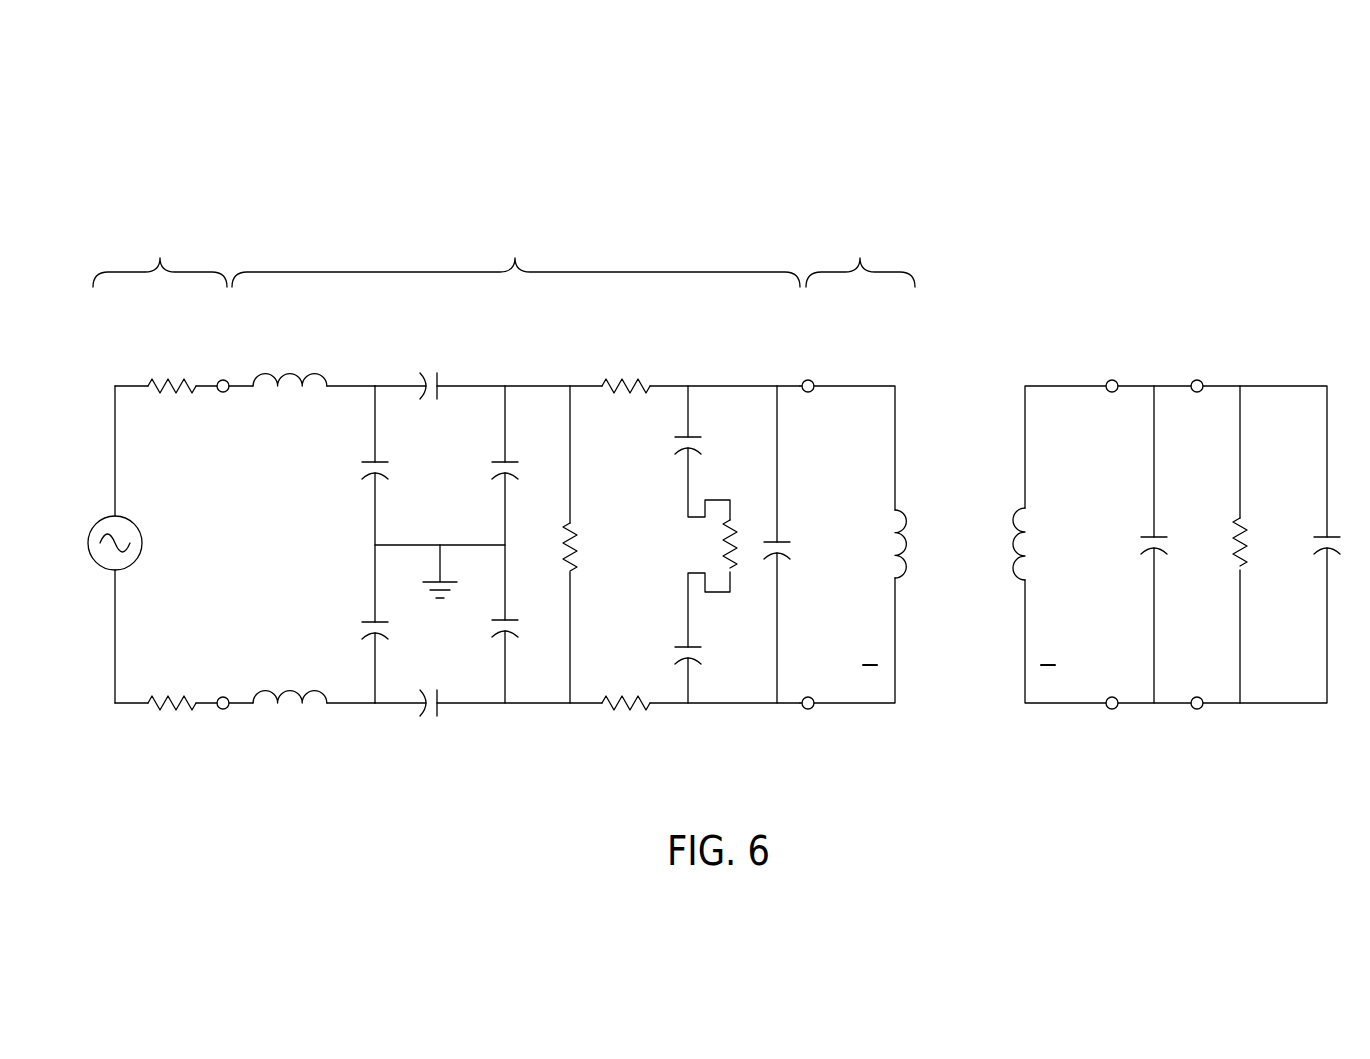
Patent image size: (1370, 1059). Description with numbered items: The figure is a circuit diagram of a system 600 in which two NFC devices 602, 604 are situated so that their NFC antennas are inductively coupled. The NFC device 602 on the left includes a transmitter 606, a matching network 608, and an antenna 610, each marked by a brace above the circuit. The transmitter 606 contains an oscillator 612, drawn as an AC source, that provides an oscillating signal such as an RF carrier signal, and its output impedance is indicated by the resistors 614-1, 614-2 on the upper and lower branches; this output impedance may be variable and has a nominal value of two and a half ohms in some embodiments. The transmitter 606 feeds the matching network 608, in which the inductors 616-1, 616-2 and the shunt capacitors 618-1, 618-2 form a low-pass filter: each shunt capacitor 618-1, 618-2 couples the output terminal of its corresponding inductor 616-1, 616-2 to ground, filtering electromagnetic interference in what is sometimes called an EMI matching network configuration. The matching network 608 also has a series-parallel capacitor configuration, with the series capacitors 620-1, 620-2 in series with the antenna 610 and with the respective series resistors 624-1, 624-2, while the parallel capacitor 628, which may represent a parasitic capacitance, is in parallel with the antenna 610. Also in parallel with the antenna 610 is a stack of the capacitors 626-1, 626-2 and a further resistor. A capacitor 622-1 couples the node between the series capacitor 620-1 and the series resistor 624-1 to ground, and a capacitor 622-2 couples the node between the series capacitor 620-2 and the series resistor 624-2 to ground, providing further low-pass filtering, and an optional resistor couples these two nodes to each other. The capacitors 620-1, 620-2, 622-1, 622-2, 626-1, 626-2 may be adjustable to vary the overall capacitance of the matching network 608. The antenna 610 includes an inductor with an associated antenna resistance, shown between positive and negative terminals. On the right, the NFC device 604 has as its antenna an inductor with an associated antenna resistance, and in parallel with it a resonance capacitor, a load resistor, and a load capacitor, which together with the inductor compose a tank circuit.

The system 600 is at (783, 90).
The NFC device 602 is at (506, 176).
The NFC device 604 is at (1149, 243).
The transmitter 606 is at (231, 505).
The matching network 608 is at (533, 505).
The antenna 610 is at (870, 468).
The oscillator 612 is at (131, 522).
The resistor 614-1 is at (171, 353).
The resistor 614-2 is at (171, 739).
The inductor 616-1 is at (290, 349).
The inductor 616-2 is at (290, 737).
The capacitor 618-1 is at (341, 471).
The capacitor 618-2 is at (341, 631).
The capacitor 620-1 is at (429, 356).
The capacitor 620-2 is at (429, 736).
The capacitor 622-1 is at (475, 464).
The capacitor 622-2 is at (475, 639).
The resistor 624-1 is at (628, 353).
The resistor 624-2 is at (628, 739).
The capacitor 626-1 is at (656, 447).
The capacitor 626-2 is at (656, 647).
The capacitor 628 is at (799, 544).